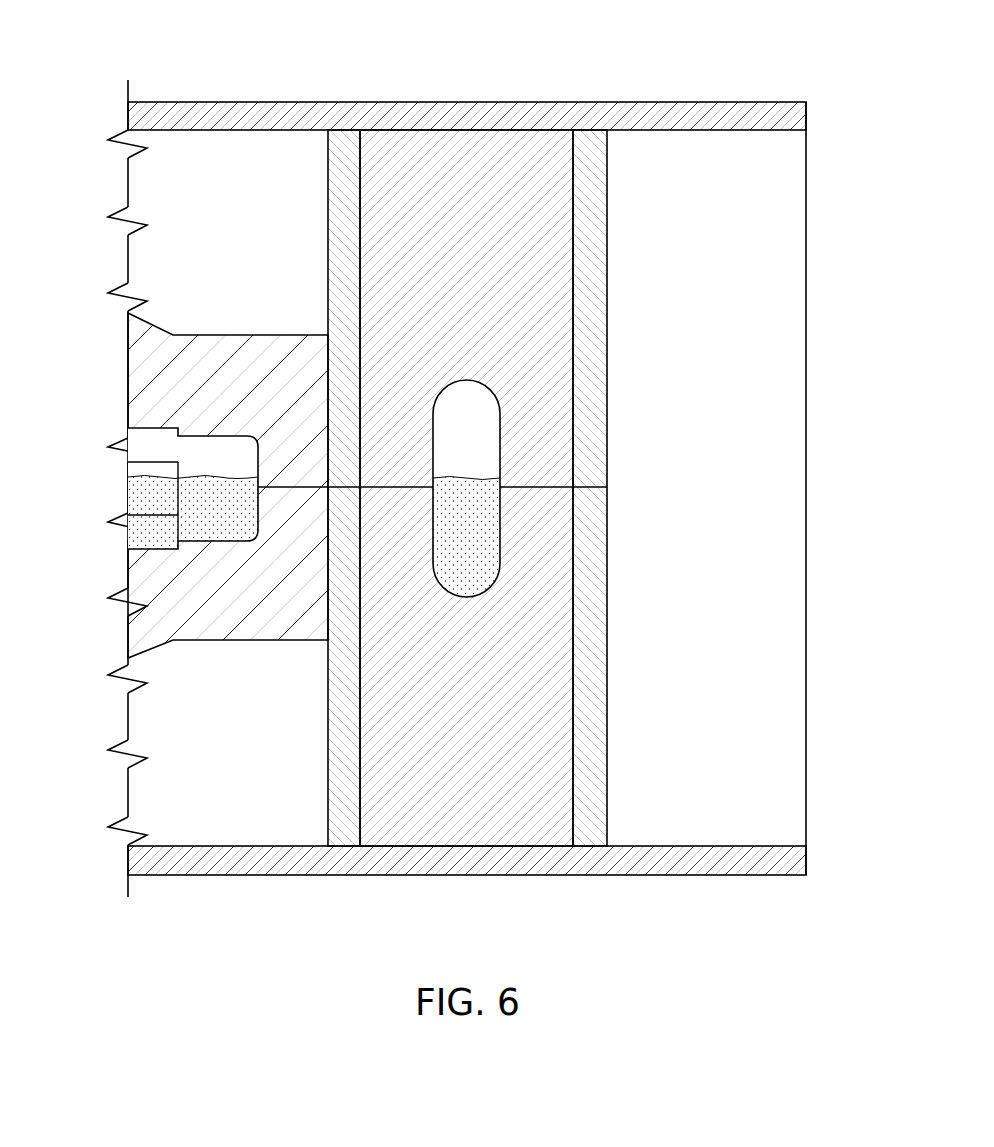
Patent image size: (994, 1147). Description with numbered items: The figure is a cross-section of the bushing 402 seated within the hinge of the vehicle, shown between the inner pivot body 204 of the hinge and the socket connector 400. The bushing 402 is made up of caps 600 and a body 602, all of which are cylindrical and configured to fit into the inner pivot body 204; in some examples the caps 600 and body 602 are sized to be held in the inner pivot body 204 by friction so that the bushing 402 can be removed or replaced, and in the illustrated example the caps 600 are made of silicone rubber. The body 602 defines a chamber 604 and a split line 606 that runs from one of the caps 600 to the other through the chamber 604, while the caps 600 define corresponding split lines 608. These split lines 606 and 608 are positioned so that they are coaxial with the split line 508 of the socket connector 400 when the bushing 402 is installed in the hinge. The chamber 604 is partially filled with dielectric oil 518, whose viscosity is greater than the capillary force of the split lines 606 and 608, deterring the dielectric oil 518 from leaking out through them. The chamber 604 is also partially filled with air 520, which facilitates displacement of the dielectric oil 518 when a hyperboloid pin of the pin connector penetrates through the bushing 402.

The inner pivot body 204 is at (623, 102).
The bushing 402 is at (500, 847).
The socket connector 400 is at (248, 335).
The caps 600 is at (328, 197).
The body 602 is at (520, 175).
The chamber 604 is at (477, 420).
The split line 606 is at (546, 484).
The split lines 608 is at (344, 484).
The split line 508 is at (282, 484).
The dielectric oil 518 is at (152, 527).
The air 520 is at (463, 397).